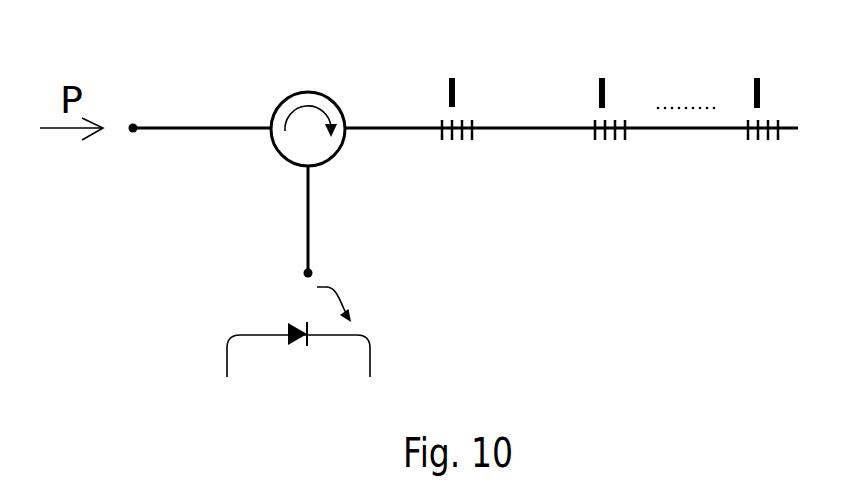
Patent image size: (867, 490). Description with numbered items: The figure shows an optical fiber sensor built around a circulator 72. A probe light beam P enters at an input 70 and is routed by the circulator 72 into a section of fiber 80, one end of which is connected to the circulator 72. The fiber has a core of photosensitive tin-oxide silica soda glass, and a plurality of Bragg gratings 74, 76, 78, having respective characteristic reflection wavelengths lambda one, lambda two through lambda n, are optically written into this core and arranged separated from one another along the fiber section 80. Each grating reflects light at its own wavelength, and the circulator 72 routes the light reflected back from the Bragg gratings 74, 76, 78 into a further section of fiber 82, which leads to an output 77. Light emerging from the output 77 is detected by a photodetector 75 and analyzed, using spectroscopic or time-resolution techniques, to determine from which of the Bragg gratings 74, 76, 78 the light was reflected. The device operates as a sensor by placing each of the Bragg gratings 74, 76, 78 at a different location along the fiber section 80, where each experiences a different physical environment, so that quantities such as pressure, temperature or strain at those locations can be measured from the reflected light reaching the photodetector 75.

The input 70 is at (133, 126).
The circulator 72 is at (293, 93).
The Bragg grating 74 is at (462, 142).
The photodetector 75 is at (300, 343).
The Bragg grating 76 is at (617, 142).
The output 77 is at (304, 275).
The Bragg grating 78 is at (767, 142).
The section of fiber 80 is at (525, 131).
The further section of fiber 82 is at (307, 211).